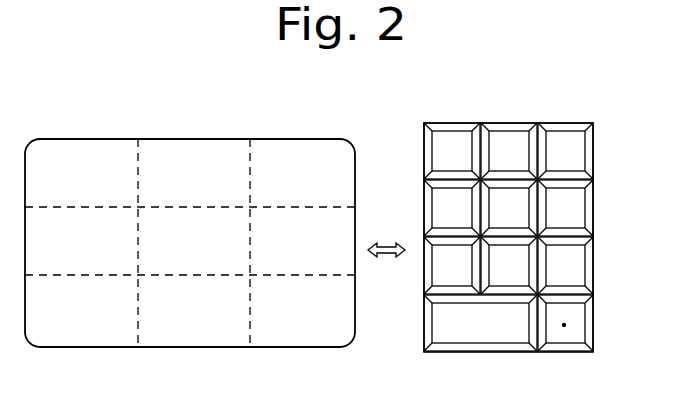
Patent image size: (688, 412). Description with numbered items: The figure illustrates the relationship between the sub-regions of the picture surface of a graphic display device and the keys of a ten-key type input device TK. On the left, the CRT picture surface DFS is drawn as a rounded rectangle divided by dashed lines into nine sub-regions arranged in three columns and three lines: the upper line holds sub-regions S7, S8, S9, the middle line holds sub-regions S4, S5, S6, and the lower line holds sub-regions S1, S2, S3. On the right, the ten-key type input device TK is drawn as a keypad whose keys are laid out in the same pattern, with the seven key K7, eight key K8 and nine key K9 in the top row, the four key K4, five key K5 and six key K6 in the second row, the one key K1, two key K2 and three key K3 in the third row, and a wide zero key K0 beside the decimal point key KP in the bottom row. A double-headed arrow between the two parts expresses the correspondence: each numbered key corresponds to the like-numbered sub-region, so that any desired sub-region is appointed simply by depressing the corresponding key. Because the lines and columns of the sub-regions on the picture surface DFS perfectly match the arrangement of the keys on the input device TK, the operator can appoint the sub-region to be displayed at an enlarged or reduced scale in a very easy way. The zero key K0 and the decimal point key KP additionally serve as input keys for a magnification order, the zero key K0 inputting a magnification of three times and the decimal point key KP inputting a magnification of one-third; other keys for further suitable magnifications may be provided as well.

The picture surface DFS is at (271, 140).
The ten-key type input device TK is at (580, 123).
The sub-region S1 is at (80, 309).
The sub-region S2 is at (188, 309).
The sub-region S3 is at (293, 309).
The sub-region S4 is at (80, 243).
The sub-region S5 is at (188, 243).
The sub-region S6 is at (293, 243).
The sub-region S7 is at (80, 176).
The sub-region S8 is at (188, 176).
The sub-region S9 is at (293, 176).
The "0" key K0 is at (495, 343).
The "1" key K1 is at (440, 280).
The "2" key K2 is at (512, 278).
The "3" key K3 is at (575, 262).
The "4" key K4 is at (440, 208).
The "5" key K5 is at (527, 193).
The "6" key K6 is at (580, 223).
The "7" key K7 is at (461, 123).
The "8" key K8 is at (526, 124).
The "9" key K9 is at (588, 152).
The decimal point key KP is at (582, 334).